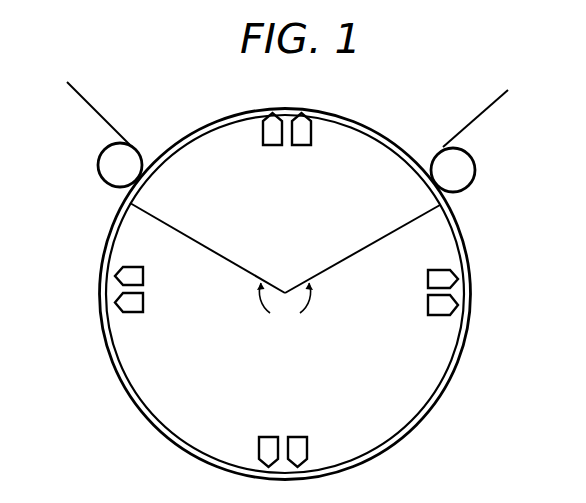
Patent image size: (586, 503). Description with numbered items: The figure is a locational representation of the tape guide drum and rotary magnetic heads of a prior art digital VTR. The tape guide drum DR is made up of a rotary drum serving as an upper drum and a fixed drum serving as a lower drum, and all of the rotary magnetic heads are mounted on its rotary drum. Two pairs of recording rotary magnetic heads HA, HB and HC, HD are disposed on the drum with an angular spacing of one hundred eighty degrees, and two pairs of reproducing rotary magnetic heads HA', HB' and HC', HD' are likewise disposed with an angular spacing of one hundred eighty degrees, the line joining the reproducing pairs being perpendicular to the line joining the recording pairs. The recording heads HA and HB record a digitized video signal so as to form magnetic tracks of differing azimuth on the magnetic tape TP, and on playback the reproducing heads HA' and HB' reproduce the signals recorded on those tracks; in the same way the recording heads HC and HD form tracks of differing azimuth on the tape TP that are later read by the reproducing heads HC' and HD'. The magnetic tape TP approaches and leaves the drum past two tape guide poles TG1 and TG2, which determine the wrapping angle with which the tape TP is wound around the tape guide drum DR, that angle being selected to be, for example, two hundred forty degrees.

The tape guide drum DR is at (383, 137).
The magnetic tape TP is at (105, 113).
The tape guide pole TG1 is at (102, 170).
The tape guide pole TG2 is at (475, 172).
The recording rotary magnetic head HA is at (418, 307).
The recording rotary magnetic head HB is at (418, 280).
The recording rotary magnetic head HC is at (154, 276).
The recording rotary magnetic head HD is at (155, 303).
The reproducing rotary magnetic head HA' is at (310, 155).
The reproducing rotary magnetic head HB' is at (265, 155).
The reproducing rotary magnetic head HC' is at (264, 425).
The reproducing rotary magnetic head HD' is at (306, 425).